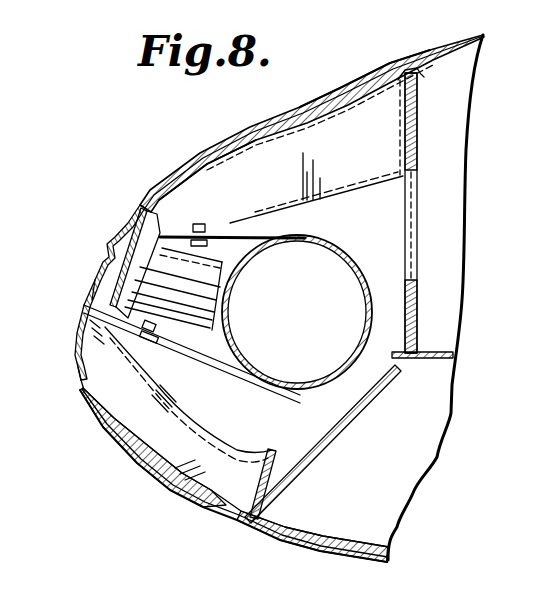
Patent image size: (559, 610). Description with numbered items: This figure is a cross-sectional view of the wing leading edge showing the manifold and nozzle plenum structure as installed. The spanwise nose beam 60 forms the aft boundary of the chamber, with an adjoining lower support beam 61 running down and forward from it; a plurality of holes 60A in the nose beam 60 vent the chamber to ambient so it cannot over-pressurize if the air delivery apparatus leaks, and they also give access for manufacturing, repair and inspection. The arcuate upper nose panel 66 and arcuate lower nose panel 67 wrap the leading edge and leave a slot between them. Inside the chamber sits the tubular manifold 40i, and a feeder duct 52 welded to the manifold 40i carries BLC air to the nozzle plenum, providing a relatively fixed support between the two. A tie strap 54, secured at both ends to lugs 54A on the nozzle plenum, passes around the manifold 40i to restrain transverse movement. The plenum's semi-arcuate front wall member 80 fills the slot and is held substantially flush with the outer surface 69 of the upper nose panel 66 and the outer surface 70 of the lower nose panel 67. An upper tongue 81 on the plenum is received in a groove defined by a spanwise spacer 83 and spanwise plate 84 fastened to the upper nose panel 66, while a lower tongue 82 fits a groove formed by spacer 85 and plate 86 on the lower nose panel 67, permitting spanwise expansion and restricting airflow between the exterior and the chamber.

The manifold 40i is at (358, 372).
The feeder duct 52 is at (191, 305).
The tie strap 54 is at (224, 368).
The lug 54A is at (173, 235).
The nose beam 60 is at (457, 60).
The hole 60A is at (417, 212).
The lower support beam 61 is at (323, 455).
The upper nose panel 66 is at (346, 88).
The lower nose panel 67 is at (168, 490).
The outer surface of upper nose panel 69 is at (274, 120).
The outer surface of lower nose panel 70 is at (137, 471).
The front wall member 80 is at (128, 230).
The upper tongue 81 is at (144, 205).
The lower tongue 82 is at (80, 318).
The spanwise spacer 83 is at (182, 182).
The spanwise plate 84 is at (207, 170).
The spanwise spacer 85 is at (78, 368).
The spanwise plate 86 is at (81, 392).